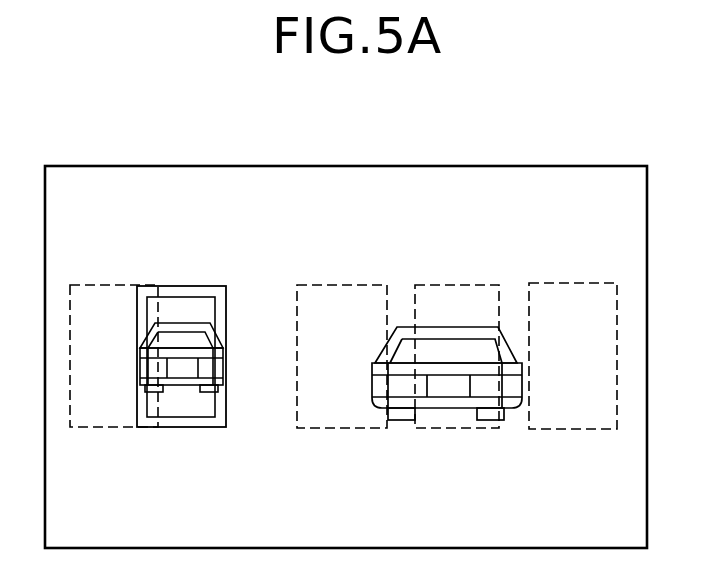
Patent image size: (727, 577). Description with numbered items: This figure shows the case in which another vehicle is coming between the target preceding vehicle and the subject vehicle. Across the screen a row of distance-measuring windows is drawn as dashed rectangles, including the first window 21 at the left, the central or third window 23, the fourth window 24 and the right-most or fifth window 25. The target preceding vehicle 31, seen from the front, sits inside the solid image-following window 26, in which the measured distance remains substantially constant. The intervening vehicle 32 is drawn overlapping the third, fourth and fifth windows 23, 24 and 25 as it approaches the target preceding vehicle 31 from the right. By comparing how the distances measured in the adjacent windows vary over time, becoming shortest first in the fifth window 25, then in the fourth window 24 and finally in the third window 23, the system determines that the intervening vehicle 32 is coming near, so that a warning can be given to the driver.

The first window 21 is at (100, 427).
The third window 23 is at (343, 425).
The fourth window 24 is at (452, 425).
The fifth window 25 is at (578, 425).
The image-following window 26 is at (192, 427).
The target preceding vehicle 31 is at (212, 323).
The intervening vehicle 32 is at (493, 338).